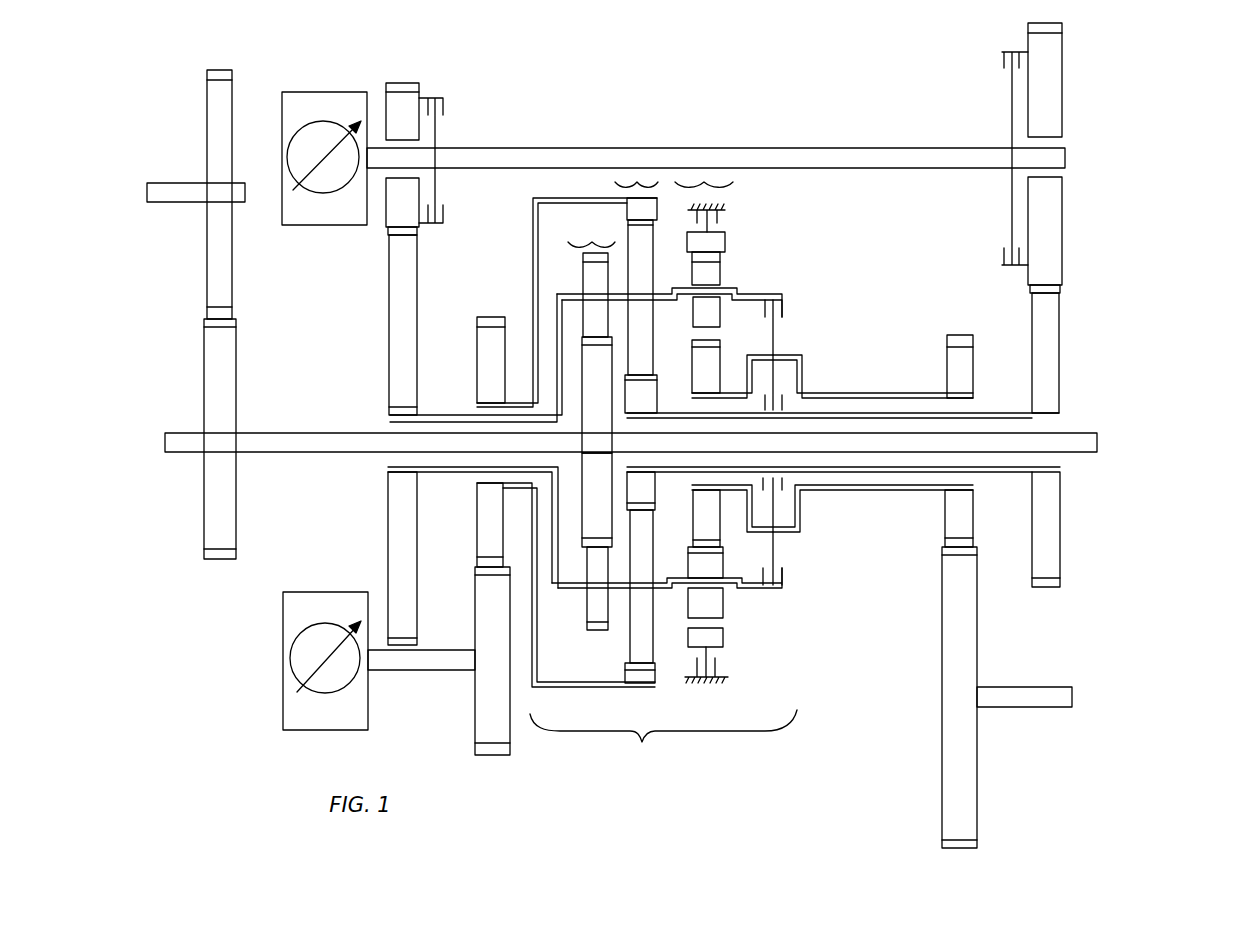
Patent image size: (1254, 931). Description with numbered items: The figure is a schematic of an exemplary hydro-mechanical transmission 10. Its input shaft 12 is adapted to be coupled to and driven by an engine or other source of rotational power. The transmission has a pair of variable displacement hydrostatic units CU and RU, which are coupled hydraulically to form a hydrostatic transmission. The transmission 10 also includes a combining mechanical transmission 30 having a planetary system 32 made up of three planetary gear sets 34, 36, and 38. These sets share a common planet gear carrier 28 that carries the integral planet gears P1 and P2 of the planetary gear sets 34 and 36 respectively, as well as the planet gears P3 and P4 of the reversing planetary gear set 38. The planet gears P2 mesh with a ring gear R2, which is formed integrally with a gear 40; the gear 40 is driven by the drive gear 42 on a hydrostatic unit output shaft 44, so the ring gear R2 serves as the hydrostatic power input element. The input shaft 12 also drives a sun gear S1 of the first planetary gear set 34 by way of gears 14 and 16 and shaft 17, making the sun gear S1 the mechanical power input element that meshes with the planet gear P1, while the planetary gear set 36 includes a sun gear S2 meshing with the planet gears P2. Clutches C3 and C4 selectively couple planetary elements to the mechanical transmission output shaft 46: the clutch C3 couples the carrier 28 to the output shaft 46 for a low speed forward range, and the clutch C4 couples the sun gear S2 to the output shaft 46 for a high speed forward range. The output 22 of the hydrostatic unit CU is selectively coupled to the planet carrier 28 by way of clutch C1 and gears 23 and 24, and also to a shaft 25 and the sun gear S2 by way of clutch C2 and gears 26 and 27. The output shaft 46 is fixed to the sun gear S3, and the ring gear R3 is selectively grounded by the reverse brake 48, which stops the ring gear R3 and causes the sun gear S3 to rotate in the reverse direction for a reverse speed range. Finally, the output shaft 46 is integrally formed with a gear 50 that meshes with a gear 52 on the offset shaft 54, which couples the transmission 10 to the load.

The hydro-mechanical transmission 10 is at (682, 432).
The input shaft 12 is at (172, 183).
The gear 14 is at (207, 105).
The gear 16 is at (236, 369).
The shaft 17 is at (307, 433).
The output of hydrostatic unit CU 22 is at (548, 148).
The gear 23 is at (398, 83).
The gear 24 is at (390, 334).
The shaft 25 is at (1003, 473).
The gear 26 is at (1060, 85).
The gear 27 is at (1050, 345).
The planet gear carrier 28 is at (745, 288).
The combining mechanical transmission 30 is at (663, 679).
The planetary system 32 is at (835, 585).
The first planetary gear set 34 is at (567, 430).
The planetary gear set 36 is at (669, 390).
The reversing planetary gear set 38 is at (724, 255).
The gear 40 is at (487, 522).
The drive gear 42 is at (483, 600).
The hydrostatic unit output shaft 44 is at (423, 662).
The mechanical transmission output shaft 46 is at (888, 393).
The reverse brake 48 is at (725, 210).
The gear 50 is at (965, 368).
The gear 52 is at (970, 633).
The offset shaft 54 is at (1040, 688).
The hydrostatic unit CU is at (330, 92).
The hydrostatic unit RU is at (325, 592).
The clutch C1 is at (443, 100).
The clutch C2 is at (1002, 60).
The clutch C3 is at (782, 307).
The clutch C4 is at (782, 403).
The sun gear S1 is at (587, 362).
The sun gear S2 is at (647, 397).
The sun gear S3 is at (694, 340).
The planet gear P1 is at (588, 608).
The planet gear P2 is at (645, 557).
The planet gear P3 is at (718, 603).
The planet gear P4 is at (710, 312).
The ring gear R2 is at (660, 677).
The ring gear R3 is at (720, 638).